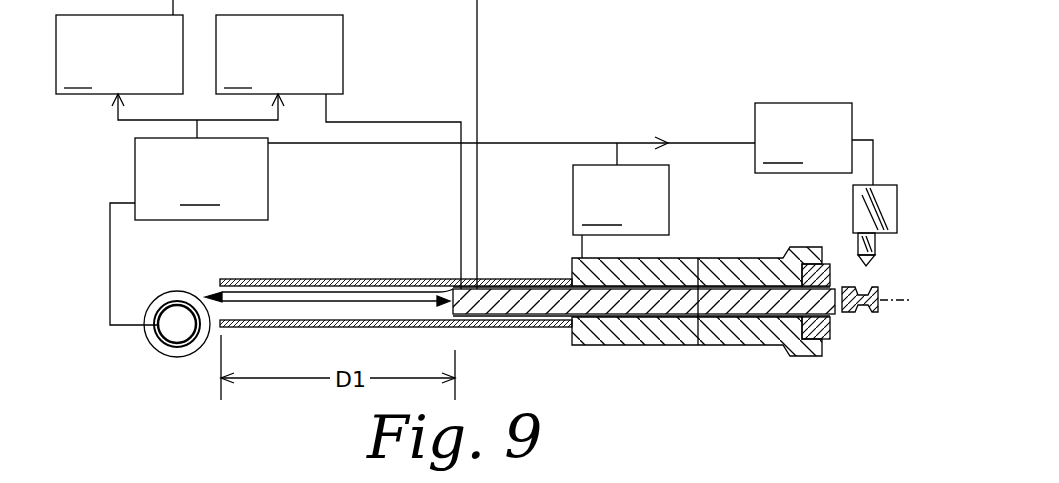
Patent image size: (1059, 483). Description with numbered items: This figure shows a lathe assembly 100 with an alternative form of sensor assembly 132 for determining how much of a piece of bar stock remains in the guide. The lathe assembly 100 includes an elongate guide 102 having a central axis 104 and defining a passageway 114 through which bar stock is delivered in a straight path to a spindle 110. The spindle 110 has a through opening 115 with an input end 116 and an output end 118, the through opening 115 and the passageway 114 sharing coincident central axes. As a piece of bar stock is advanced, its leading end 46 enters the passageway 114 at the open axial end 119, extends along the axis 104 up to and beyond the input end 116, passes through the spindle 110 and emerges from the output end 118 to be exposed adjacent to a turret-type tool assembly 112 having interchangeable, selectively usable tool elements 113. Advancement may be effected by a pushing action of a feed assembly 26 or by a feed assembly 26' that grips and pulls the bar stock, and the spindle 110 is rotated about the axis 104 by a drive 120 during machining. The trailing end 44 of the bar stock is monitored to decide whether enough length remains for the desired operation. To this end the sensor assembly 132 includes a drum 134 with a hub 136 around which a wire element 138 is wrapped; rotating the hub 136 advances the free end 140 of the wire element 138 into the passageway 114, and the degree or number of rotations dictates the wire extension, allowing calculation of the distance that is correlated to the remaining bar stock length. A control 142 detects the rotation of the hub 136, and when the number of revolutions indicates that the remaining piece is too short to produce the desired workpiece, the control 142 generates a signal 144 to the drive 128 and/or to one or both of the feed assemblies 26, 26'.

The feed assembly 26 is at (119, 54).
The feed assembly 26' is at (279, 54).
The control 142 is at (201, 179).
The signal 144 is at (491, 162).
The drive 120 is at (621, 200).
The drive 128 is at (803, 138).
The lathe assembly 100 is at (682, 186).
The drum 134 is at (178, 365).
The hub 136 is at (167, 345).
The sensor assembly 132 is at (263, 278).
The wire element 138 is at (337, 234).
The open axial end 119 is at (215, 290).
The passageway 114 is at (362, 287).
The free end 140 is at (401, 345).
The trailing end 44 is at (430, 280).
The guide 102 is at (667, 277).
The through opening 115 is at (698, 258).
The input end 116 is at (572, 345).
The spindle 110 is at (822, 258).
The leading end 46 is at (838, 264).
The output end 118 is at (832, 341).
The central axis 104 is at (903, 303).
The tool assembly 112 is at (900, 186).
The tool elements 113 is at (866, 265).